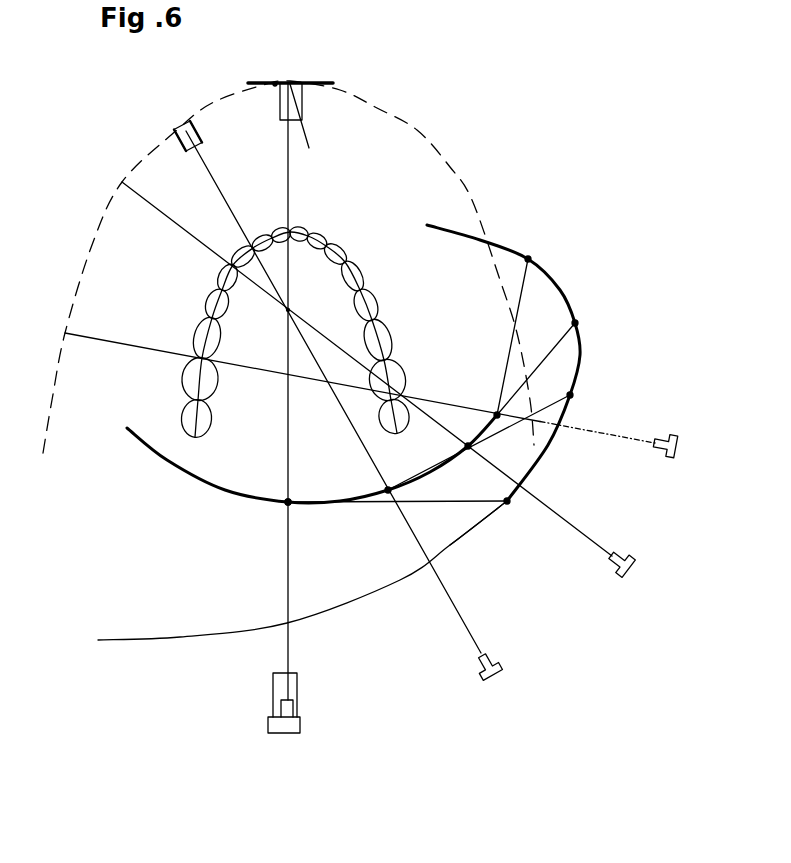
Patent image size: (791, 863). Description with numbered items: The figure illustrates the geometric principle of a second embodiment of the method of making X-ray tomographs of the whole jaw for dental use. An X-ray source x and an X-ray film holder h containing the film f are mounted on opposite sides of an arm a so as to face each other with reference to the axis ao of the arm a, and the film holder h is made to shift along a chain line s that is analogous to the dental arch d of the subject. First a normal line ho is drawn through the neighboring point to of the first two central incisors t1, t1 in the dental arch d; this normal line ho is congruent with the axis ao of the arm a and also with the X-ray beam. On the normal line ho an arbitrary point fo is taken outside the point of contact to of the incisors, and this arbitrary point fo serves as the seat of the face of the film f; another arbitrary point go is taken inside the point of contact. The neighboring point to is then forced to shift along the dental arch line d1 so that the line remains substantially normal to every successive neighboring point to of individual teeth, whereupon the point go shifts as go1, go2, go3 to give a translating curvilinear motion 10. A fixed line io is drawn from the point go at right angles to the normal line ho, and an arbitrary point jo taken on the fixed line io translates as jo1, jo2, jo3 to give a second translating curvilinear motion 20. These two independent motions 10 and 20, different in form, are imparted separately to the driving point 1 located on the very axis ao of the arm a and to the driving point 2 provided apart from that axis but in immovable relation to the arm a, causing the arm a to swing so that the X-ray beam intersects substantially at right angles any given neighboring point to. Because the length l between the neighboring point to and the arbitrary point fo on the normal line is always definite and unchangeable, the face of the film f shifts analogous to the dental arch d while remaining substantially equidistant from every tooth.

The chain line s is at (393, 118).
The curvilinear motion 20 is at (550, 452).
The driving point 2 is at (494, 523).
The curvilinear motion 10 is at (433, 476).
The axis of the arm ao is at (290, 648).
The fixed line io is at (413, 505).
The X-ray film holder h is at (320, 83).
The film f is at (298, 83).
The arbitrary point fo is at (275, 83).
The length l is at (309, 148).
The dental arch d is at (184, 408).
The dental arch line d1 is at (188, 377).
The neighboring point to is at (230, 267).
The central incisor t1 is at (276, 233).
The normal line ho is at (293, 289).
The arbitrary point go is at (289, 504).
The driving point 1 is at (286, 504).
The shifted position of point go go1 is at (406, 473).
The shifted position of point go go2 is at (471, 447).
The shifted position of point go go3 is at (496, 414).
The arbitrary point jo is at (508, 504).
The translated position of point jo jo1 is at (572, 397).
The translated position of point jo jo2 is at (577, 323).
The translated position of point jo jo3 is at (530, 259).
The arm a is at (298, 690).
The X-ray source x is at (285, 734).